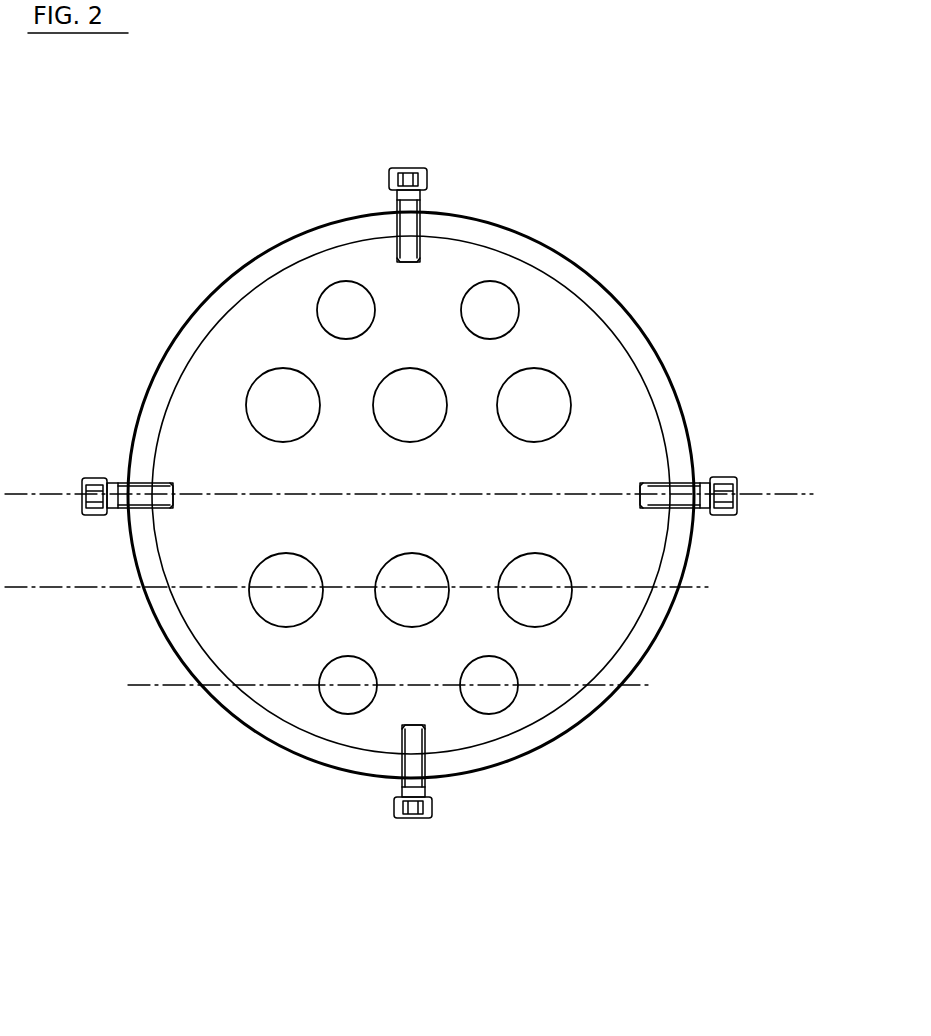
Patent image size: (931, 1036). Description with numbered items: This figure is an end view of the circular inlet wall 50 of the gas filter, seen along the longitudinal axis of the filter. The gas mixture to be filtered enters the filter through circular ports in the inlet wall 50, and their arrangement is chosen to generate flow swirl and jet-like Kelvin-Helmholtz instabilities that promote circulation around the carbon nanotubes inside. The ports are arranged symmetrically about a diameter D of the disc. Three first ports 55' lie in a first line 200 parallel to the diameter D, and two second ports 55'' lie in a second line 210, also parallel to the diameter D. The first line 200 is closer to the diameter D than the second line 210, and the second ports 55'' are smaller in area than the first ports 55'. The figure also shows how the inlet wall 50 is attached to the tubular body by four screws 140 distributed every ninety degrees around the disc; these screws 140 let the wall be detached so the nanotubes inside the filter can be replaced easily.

The inlet wall 50 is at (439, 494).
The first line 200 is at (695, 587).
The second line 210 is at (620, 687).
The screws 140 is at (432, 808).
The first ports 55' is at (410, 590).
The second ports 55'' is at (418, 685).
The diameter D is at (778, 494).